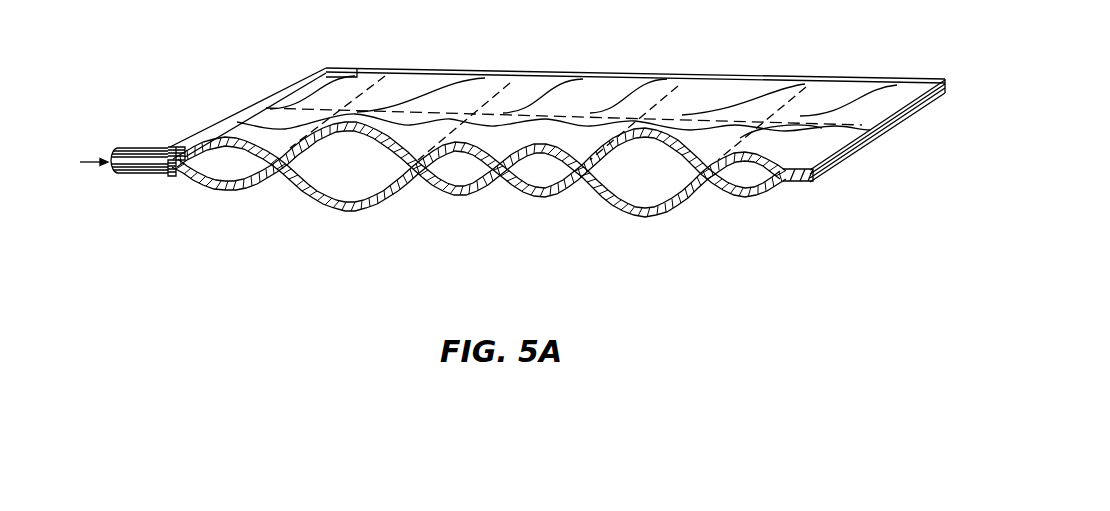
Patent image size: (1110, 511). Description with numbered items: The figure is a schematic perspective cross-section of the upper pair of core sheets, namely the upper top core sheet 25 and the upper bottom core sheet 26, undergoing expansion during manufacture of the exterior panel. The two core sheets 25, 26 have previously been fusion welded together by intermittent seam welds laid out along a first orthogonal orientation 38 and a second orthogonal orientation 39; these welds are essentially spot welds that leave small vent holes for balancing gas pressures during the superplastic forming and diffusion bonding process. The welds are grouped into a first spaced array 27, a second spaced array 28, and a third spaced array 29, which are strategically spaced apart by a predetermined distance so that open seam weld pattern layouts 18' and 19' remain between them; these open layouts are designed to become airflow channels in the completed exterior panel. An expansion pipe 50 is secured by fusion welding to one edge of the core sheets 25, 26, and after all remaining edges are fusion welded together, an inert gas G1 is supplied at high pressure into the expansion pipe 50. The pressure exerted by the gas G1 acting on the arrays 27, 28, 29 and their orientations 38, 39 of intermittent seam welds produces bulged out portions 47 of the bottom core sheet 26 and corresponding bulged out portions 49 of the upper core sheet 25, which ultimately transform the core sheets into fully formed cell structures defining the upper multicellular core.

The upper top core sheet 25 is at (938, 79).
The upper bottom core sheet 26 is at (942, 97).
The first spaced array of intermittent seam welds 27 is at (323, 83).
The second spaced array of intermittent seam welds 28 is at (607, 82).
The third spaced array of intermittent seam welds 29 is at (825, 90).
The first orthogonal orientation of intermittent seam welds 38 is at (303, 100).
The second orthogonal orientation of intermittent seam welds 39 is at (352, 78).
The bulged out portions of the bottom core sheet 47 is at (226, 197).
The bulged out portions of the upper core sheet 49 is at (214, 135).
The expansion pipe 50 is at (148, 147).
The inert gas G1 is at (82, 161).
The open seam weld pattern layout 18' is at (479, 196).
The open seam weld pattern layout 19' is at (479, 196).